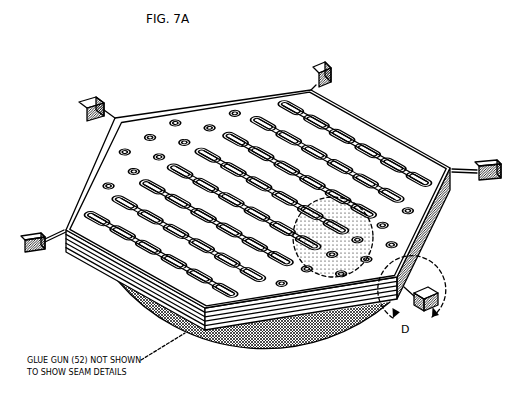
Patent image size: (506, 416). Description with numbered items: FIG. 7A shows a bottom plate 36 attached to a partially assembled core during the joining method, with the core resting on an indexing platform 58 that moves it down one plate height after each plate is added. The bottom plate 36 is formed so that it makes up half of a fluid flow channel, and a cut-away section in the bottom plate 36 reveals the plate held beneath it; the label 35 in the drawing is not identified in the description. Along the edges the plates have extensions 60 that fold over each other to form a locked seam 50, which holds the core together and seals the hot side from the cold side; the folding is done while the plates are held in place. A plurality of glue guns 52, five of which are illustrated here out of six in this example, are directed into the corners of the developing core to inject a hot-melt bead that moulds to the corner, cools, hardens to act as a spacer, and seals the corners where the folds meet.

The locked seam 50 is at (265, 96).
The glue gun 52 is at (80, 98).
The bottom plate 36 is at (395, 222).
The raised slot channel 35 is at (405, 233).
The indexing platform 58 is at (308, 334).
The extension 60 is at (349, 330).